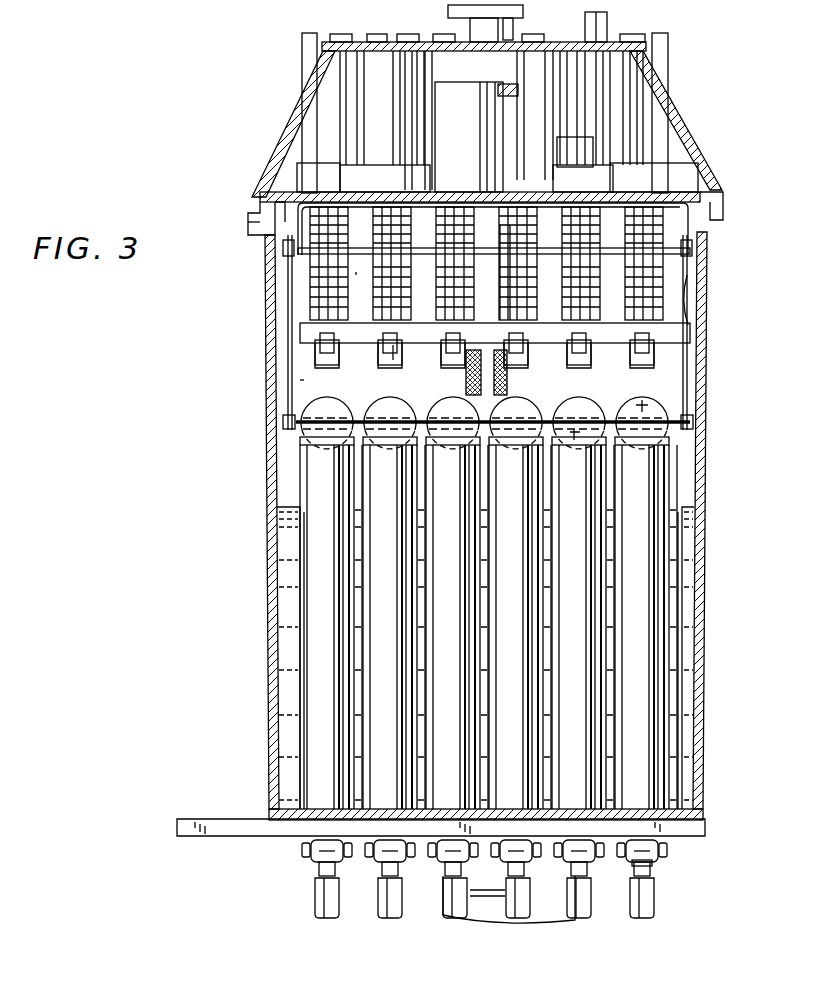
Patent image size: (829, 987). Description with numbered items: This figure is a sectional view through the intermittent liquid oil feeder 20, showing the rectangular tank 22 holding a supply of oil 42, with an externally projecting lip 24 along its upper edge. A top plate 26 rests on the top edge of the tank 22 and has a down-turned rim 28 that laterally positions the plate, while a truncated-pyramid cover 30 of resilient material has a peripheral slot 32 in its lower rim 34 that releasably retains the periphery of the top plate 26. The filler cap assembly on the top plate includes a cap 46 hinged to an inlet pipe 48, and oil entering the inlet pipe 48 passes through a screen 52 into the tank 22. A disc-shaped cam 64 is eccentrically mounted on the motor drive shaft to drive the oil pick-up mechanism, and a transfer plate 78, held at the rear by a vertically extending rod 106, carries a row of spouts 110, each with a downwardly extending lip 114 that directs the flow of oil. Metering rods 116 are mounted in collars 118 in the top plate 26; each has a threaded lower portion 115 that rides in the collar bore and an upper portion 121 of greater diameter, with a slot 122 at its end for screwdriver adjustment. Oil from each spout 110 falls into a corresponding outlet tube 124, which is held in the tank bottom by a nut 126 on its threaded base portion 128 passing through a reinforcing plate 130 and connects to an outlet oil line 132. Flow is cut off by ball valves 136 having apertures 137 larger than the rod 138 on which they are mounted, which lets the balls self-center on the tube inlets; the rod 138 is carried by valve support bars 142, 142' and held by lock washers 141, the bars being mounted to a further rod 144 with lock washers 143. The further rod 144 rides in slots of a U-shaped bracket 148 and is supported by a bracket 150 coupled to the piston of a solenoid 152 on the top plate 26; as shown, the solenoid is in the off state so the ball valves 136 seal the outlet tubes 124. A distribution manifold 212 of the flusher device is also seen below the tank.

The intermittent liquid oil feeder 20 is at (252, 497).
The rectangular tank 22 is at (700, 552).
The externally projecting lip 24 is at (258, 210).
The top plate 26 is at (652, 193).
The down-turned rim 28 is at (716, 210).
The cover 30 is at (688, 127).
The peripheral slot 32 is at (275, 192).
The lower rim 34 is at (248, 222).
The oil 42 is at (682, 608).
The cap 46 is at (448, 9).
The inlet pipe 48 is at (512, 25).
The screen 52 is at (507, 386).
The disc-shaped cam 64 is at (425, 262).
The transfer plate 78 is at (355, 345).
The vertically extending rod 106 is at (518, 282).
The spout 110 is at (398, 345).
The downwardly extending lip 114 is at (388, 358).
The threaded lower portion 115 is at (372, 280).
The metering rod 116 is at (377, 30).
The collar 118 is at (318, 168).
The upper portion of metering rod 121 is at (400, 114).
The slot 122 is at (648, 32).
The outlet tube 124 is at (666, 473).
The nut 126 is at (440, 858).
The threaded base portion 128 is at (656, 862).
The reinforcing plate 130 is at (236, 818).
The outlet oil line 132 is at (339, 893).
The ball valve 136 is at (645, 402).
The aperture 137 is at (578, 445).
The rod 138 is at (602, 408).
The lock washer 141 is at (286, 418).
The valve support bar 142 is at (520, 332).
The valve support bar 142' is at (319, 386).
The lock washer 143 is at (288, 240).
The further rod 144 is at (692, 290).
The U-shaped bracket 148 is at (448, 200).
The bracket 150 is at (458, 208).
The solenoid 152 is at (473, 137).
The distribution manifold 212 is at (517, 899).